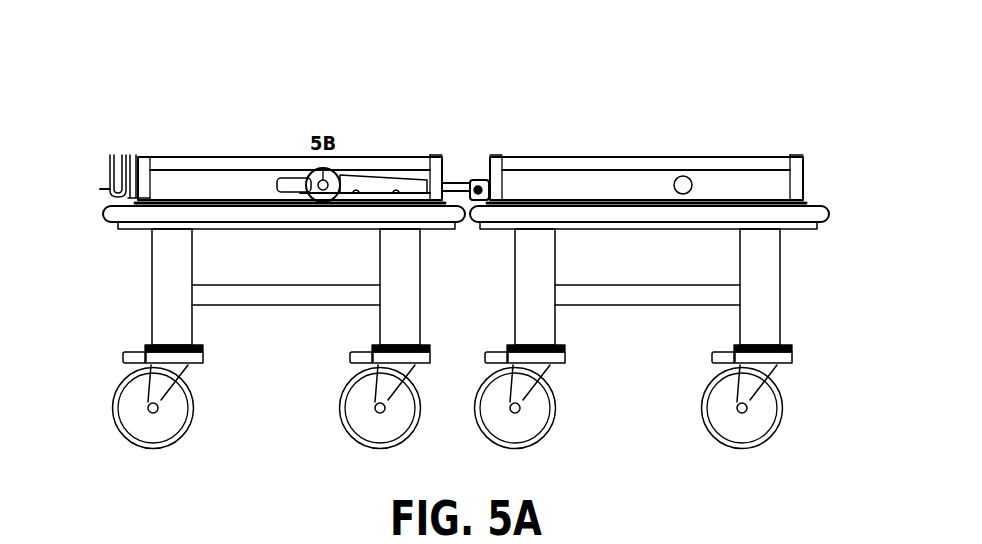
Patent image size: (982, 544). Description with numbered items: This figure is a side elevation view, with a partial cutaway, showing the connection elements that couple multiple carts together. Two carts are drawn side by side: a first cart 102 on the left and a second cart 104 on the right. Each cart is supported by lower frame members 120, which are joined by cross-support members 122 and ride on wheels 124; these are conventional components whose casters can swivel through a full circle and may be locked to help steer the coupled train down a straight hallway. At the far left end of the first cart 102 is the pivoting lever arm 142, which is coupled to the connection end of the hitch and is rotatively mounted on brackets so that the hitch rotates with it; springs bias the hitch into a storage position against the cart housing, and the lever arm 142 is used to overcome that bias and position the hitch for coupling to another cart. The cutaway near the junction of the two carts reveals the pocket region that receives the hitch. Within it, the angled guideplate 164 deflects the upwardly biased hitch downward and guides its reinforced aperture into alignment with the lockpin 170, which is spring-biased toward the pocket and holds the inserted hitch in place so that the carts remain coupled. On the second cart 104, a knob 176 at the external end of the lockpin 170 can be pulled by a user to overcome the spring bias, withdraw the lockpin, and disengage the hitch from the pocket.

The first cart 102 is at (284, 133).
The second cart 104 is at (649, 133).
The pivoting lever arm 142 is at (110, 170).
The lockpin 170 is at (380, 139).
The angled guideplate 164 is at (392, 157).
The knob 176 is at (734, 150).
The lower frame members 120 is at (519, 287).
The cross-support members 122 is at (466, 324).
The wheels 124 is at (482, 407).